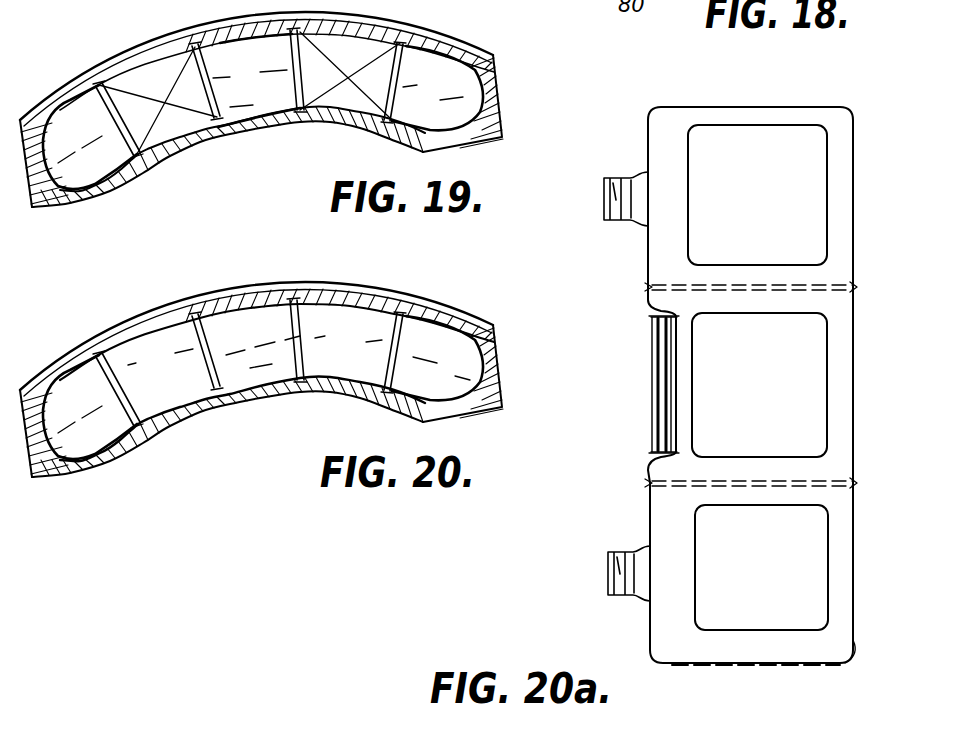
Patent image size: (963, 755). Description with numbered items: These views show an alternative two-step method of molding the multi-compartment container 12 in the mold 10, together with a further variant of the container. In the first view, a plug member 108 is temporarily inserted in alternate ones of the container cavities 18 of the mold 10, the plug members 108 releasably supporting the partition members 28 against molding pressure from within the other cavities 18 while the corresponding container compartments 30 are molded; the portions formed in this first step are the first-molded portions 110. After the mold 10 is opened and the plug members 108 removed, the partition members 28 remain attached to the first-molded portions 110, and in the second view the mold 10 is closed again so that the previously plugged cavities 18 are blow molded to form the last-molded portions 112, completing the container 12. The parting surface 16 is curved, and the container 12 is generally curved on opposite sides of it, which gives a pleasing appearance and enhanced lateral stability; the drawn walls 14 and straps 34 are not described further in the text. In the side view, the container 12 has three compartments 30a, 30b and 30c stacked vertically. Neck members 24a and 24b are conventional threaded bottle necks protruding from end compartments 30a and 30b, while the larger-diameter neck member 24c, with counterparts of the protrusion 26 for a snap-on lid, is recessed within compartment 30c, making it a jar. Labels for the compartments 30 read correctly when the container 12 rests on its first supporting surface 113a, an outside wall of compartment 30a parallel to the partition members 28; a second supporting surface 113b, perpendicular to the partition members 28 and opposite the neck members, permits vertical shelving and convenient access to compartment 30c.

In FIG. 19, the mold 10 is at (200, 162).
In FIG. 20, the mold 10 is at (261, 397).
In FIG. 20, the container 12 is at (221, 451).
In FIG. 20a, the container 12 is at (650, 627).
In FIG. 19, the container wall 14 is at (350, 118).
In FIG. 20, the container wall 14 is at (302, 375).
In FIG. 19, the parting surface 16 is at (504, 133).
In FIG. 19, the container cavities 18 is at (104, 176).
In FIG. 20, the container cavities 18 is at (264, 384).
In FIG. 20a, the neck member 24a is at (618, 548).
In FIG. 20a, the neck member 24b is at (617, 222).
In FIG. 20a, the neck member 24c is at (651, 421).
In FIG. 20a, the protrusion 26 is at (658, 310).
In FIG. 19, the partition members 28 is at (403, 41).
In FIG. 20, the partition members 28 is at (283, 346).
In FIG. 20a, the partition members 28 is at (700, 285).
In FIG. 19, the container compartments 30 is at (90, 142).
In FIG. 20, the container compartments 30 is at (263, 385).
In FIG. 20a, the compartment 30a is at (770, 612).
In FIG. 20a, the compartment 30b is at (771, 247).
In FIG. 20a, the compartment 30c is at (772, 432).
In FIG. 20, the partition strap 34 is at (276, 387).
In FIG. 19, the plug member 108 is at (180, 85).
In FIG. 19, the first-molded portions 110 is at (124, 188).
In FIG. 20, the first-molded portions 110 is at (303, 452).
In FIG. 20, the last-molded portions 112 is at (232, 426).
In FIG. 20a, the first supporting surface 113a is at (672, 678).
In FIG. 20a, the second supporting surface 113b is at (860, 640).